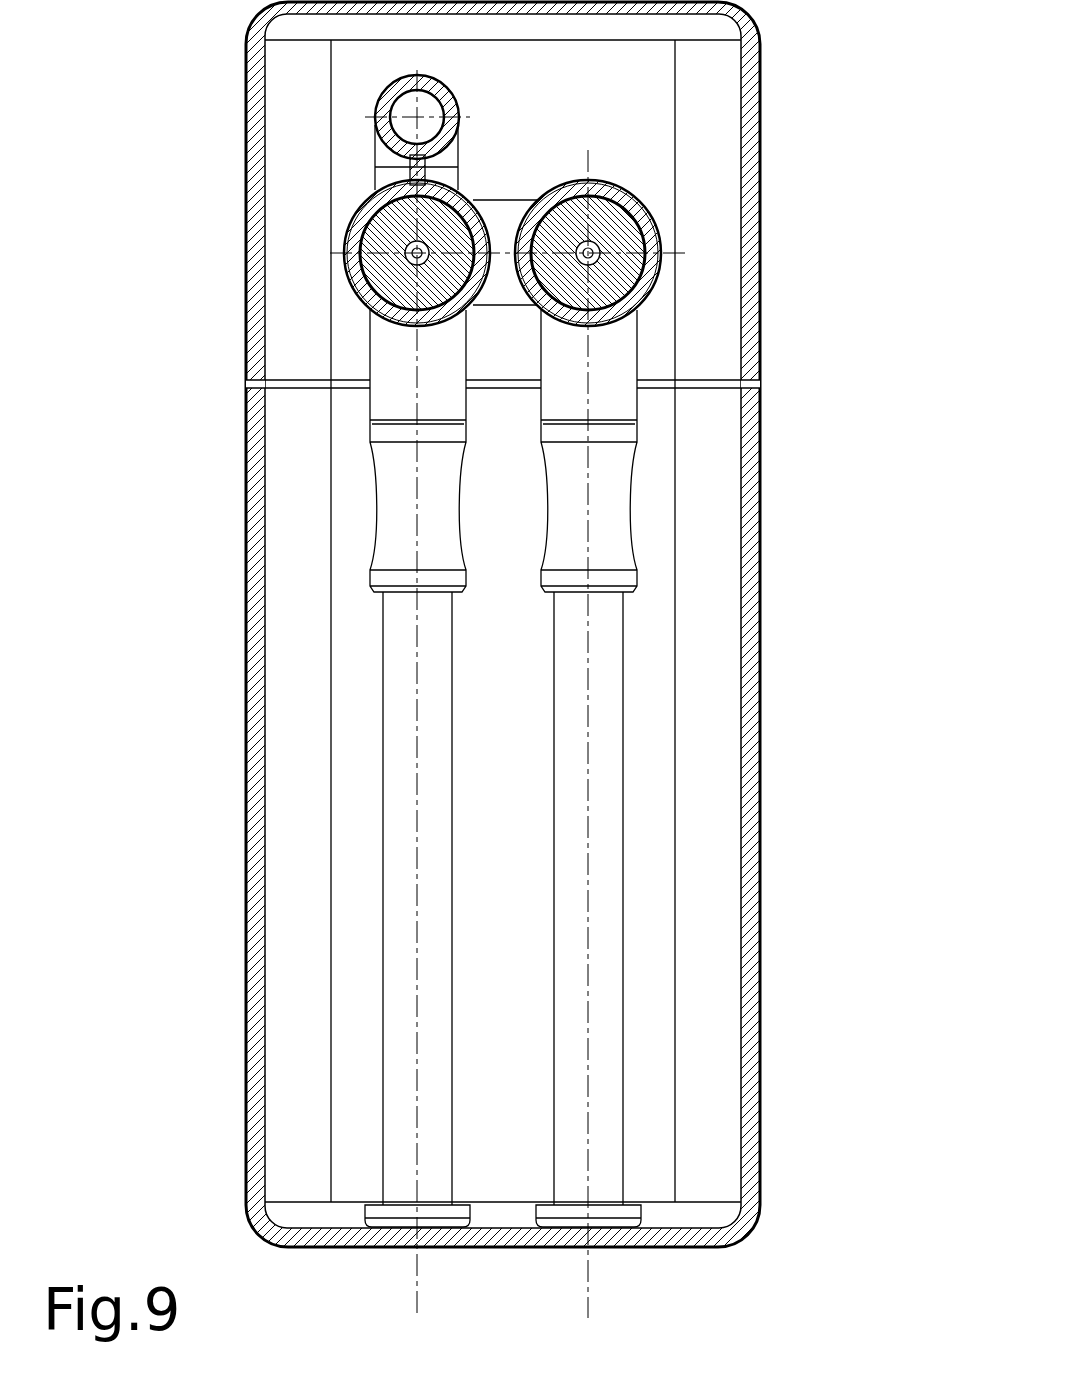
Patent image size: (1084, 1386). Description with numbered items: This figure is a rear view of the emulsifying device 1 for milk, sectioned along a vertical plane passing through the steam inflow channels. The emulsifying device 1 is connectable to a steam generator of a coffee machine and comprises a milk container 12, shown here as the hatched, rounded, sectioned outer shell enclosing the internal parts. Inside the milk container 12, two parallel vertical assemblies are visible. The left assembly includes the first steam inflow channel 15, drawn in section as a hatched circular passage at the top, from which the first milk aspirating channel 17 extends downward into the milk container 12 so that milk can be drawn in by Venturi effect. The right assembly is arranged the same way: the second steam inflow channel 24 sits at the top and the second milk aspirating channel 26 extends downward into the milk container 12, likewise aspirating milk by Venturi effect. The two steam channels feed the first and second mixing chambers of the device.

The emulsifying device 1 is at (872, 93).
The milk container 12 is at (760, 778).
The first steam inflow channel 15 is at (387, 280).
The first milk aspirating channel 17 is at (373, 517).
The second steam inflow channel 24 is at (612, 277).
The second milk aspirating channel 26 is at (653, 525).